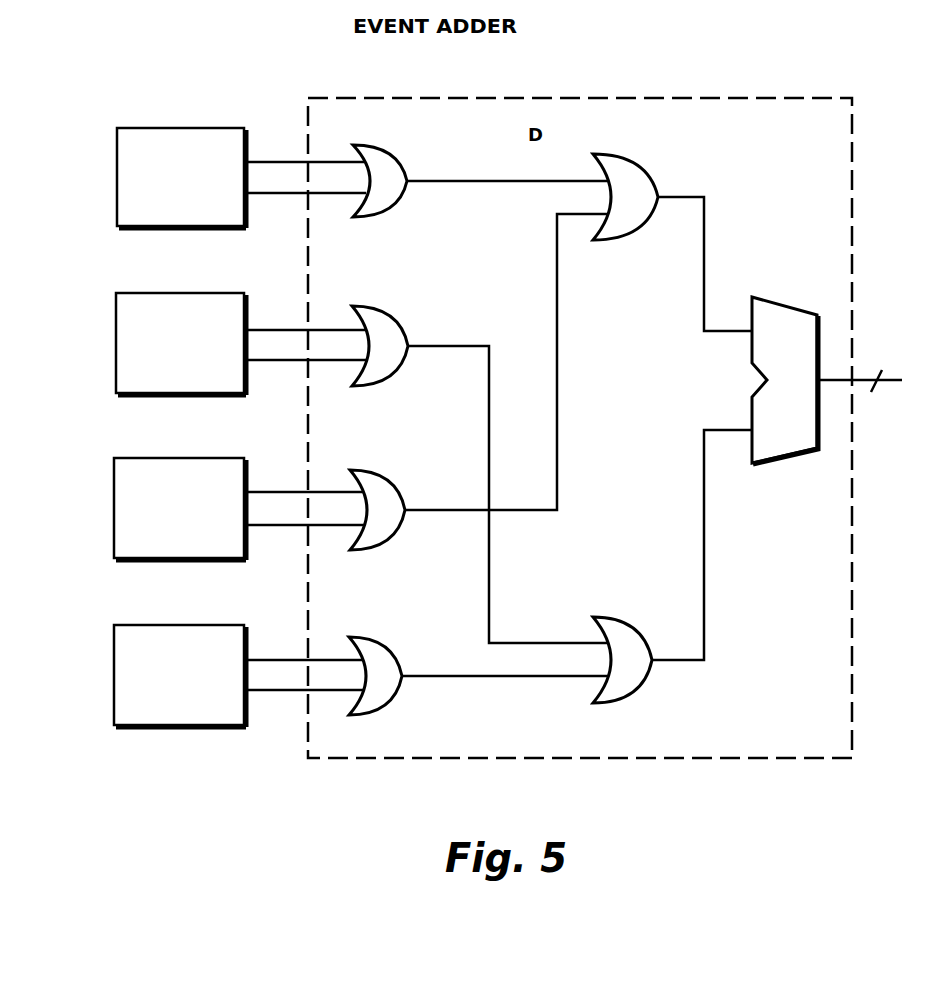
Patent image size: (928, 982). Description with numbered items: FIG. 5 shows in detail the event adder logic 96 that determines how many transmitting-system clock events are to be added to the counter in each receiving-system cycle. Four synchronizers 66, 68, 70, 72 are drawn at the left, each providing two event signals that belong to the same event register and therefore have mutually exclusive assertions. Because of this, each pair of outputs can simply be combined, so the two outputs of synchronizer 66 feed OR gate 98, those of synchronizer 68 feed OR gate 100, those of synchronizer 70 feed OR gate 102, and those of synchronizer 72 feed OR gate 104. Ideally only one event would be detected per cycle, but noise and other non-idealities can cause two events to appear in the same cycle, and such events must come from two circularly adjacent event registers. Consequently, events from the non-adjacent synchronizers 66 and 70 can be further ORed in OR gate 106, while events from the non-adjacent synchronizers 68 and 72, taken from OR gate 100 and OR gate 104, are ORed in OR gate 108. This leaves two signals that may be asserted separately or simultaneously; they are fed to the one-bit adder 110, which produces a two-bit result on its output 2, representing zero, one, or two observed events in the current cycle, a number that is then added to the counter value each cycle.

The synchronizer 66 is at (158, 128).
The synchronizer 68 is at (158, 293).
The synchronizer 70 is at (158, 458).
The synchronizer 72 is at (150, 625).
The event adder logic 96 is at (555, 98).
The OR gate 98 is at (400, 165).
The OR gate 100 is at (400, 320).
The OR gate 102 is at (400, 485).
The OR gate 104 is at (398, 652).
The OR gate 106 is at (650, 170).
The OR gate 108 is at (645, 640).
The 1-bit adder 110 is at (781, 303).
The two-bit output bus 2 is at (859, 371).